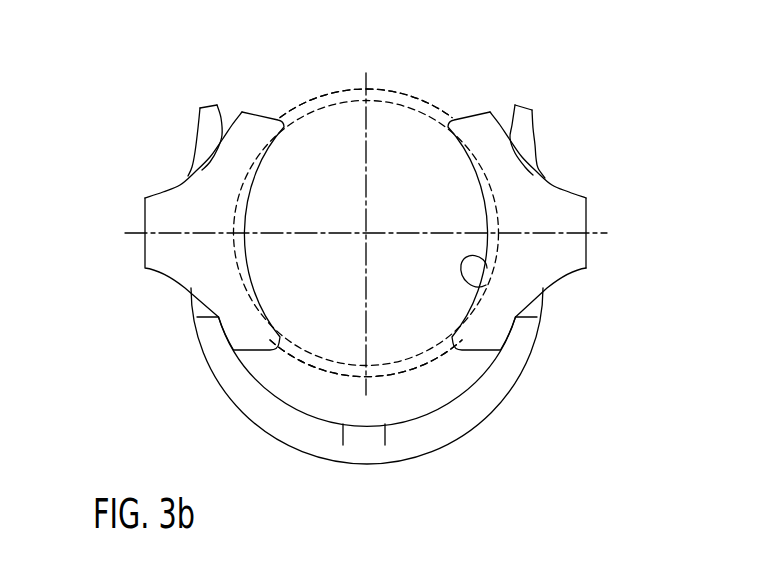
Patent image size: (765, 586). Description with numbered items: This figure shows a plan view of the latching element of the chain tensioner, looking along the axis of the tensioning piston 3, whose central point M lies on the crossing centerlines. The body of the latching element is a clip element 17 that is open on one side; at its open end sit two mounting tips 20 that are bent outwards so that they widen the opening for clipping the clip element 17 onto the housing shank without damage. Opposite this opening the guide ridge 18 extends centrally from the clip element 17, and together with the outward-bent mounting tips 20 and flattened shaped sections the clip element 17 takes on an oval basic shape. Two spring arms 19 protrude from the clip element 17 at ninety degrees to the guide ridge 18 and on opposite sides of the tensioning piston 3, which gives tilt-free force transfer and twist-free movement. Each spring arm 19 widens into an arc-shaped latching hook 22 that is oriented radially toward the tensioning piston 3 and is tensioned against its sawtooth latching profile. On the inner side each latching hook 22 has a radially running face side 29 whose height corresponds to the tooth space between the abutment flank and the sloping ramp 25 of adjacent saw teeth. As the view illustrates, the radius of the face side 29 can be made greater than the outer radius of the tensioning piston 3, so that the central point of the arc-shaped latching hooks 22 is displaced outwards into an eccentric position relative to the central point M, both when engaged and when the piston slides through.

The tensioning piston 3 is at (397, 126).
The sloping ramp 25 is at (428, 107).
The central point of the tensioning piston M is at (368, 232).
The mounting tips 20 is at (534, 123).
The arc-shaped latching hooks 22 is at (528, 186).
The spring arms 19 is at (586, 213).
The face side 29 is at (458, 290).
The clip element 17 is at (487, 380).
The guide ridge 18 is at (372, 437).